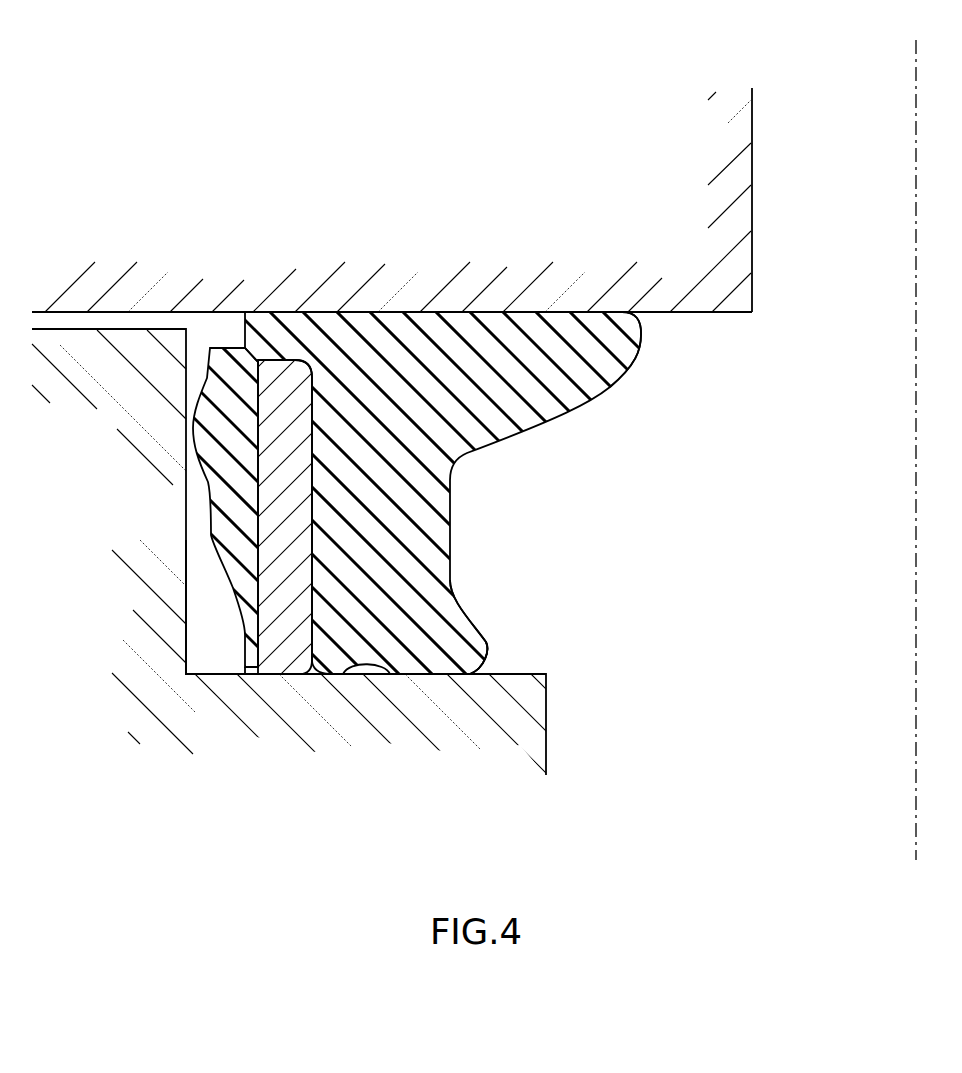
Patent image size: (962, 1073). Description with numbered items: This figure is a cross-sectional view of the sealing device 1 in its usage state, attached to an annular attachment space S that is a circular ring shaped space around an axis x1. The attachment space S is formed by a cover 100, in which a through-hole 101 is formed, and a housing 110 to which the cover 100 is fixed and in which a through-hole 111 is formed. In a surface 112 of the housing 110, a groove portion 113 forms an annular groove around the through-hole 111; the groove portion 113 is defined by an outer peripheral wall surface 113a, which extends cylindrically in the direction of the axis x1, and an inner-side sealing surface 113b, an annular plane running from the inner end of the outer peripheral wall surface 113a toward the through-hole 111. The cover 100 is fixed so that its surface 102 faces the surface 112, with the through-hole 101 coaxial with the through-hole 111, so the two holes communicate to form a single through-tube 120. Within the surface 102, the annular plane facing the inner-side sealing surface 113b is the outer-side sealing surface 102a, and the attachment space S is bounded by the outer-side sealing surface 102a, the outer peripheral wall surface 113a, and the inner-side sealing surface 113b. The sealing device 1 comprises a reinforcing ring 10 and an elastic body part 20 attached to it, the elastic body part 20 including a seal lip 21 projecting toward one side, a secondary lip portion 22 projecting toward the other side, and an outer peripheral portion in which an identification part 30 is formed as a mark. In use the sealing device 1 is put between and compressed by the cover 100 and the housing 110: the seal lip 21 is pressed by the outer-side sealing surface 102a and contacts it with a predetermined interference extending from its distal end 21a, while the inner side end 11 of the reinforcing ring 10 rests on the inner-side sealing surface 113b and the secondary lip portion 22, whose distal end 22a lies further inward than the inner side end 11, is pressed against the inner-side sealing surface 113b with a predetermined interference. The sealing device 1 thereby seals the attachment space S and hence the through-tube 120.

The sealing device 1 is at (668, 352).
The reinforcing ring 10 is at (289, 650).
The inner side end of the reinforcing ring 11 is at (257, 649).
The elastic body part 20 is at (527, 453).
The seal lip 21 is at (559, 310).
The distal end of the seal lip 21a is at (619, 338).
The secondary lip portion 22 is at (487, 630).
The distal end of the secondary lip portion 22a is at (466, 661).
The identification part 30 is at (231, 345).
The cover 100 is at (660, 94).
The through-hole of the cover 101 is at (842, 246).
The surface of the cover 102 is at (151, 321).
The outer-side sealing surface 102a is at (330, 317).
The housing 110 is at (158, 760).
The through-hole of the housing 111 is at (730, 747).
The surface of the housing 112 is at (70, 327).
The groove portion 113 is at (219, 669).
The outer peripheral wall surface 113a is at (187, 607).
The inner-side sealing surface 113b is at (523, 673).
The through-tube 120 is at (842, 486).
The attachment space S is at (479, 533).
The axis x1 is at (915, 58).